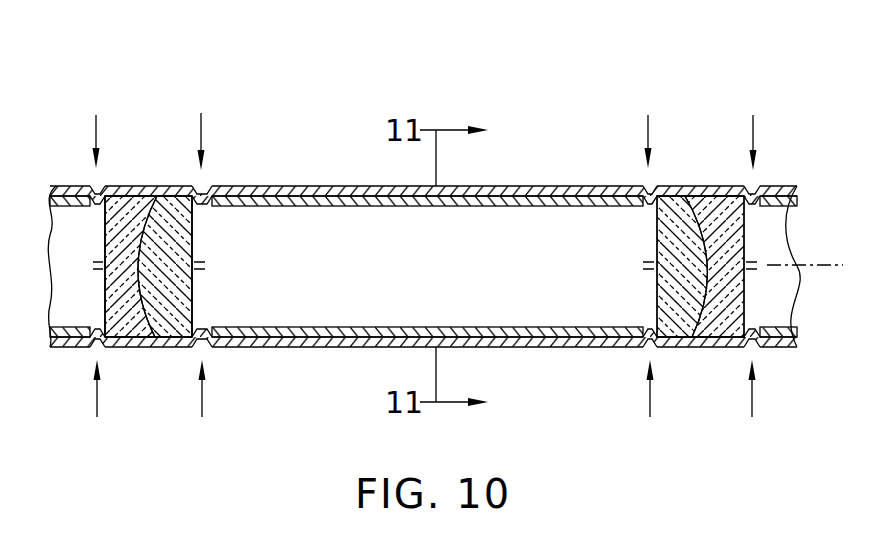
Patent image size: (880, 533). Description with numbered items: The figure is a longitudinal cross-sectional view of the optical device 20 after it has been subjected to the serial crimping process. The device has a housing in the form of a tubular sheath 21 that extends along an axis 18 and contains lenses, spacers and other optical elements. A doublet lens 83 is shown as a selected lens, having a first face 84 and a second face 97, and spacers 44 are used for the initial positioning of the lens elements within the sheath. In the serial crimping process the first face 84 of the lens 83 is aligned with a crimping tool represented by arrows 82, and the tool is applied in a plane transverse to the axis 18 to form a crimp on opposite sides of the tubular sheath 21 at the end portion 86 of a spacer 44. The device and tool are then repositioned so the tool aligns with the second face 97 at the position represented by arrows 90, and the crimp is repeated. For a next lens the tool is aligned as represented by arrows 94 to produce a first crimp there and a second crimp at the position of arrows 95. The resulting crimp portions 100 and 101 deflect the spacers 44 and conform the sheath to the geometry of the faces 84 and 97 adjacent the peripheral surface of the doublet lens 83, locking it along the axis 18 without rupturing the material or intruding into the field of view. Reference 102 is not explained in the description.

The axis 18 is at (815, 265).
The optical device 20 is at (518, 89).
The tubular sheath 21 is at (360, 186).
The spacer 44 is at (64, 204).
The crimping tool 82 is at (95, 127).
The lens 83 is at (151, 283).
The first face 84 is at (105, 286).
The end portion 86 is at (127, 210).
The arrows 90 is at (203, 128).
The arrows 94 is at (647, 127).
The arrows 95 is at (754, 128).
The second face 97 is at (193, 286).
The crimp portion 100 is at (644, 249).
The crimp portion 101 is at (657, 268).
The plug interface 102 is at (157, 337).